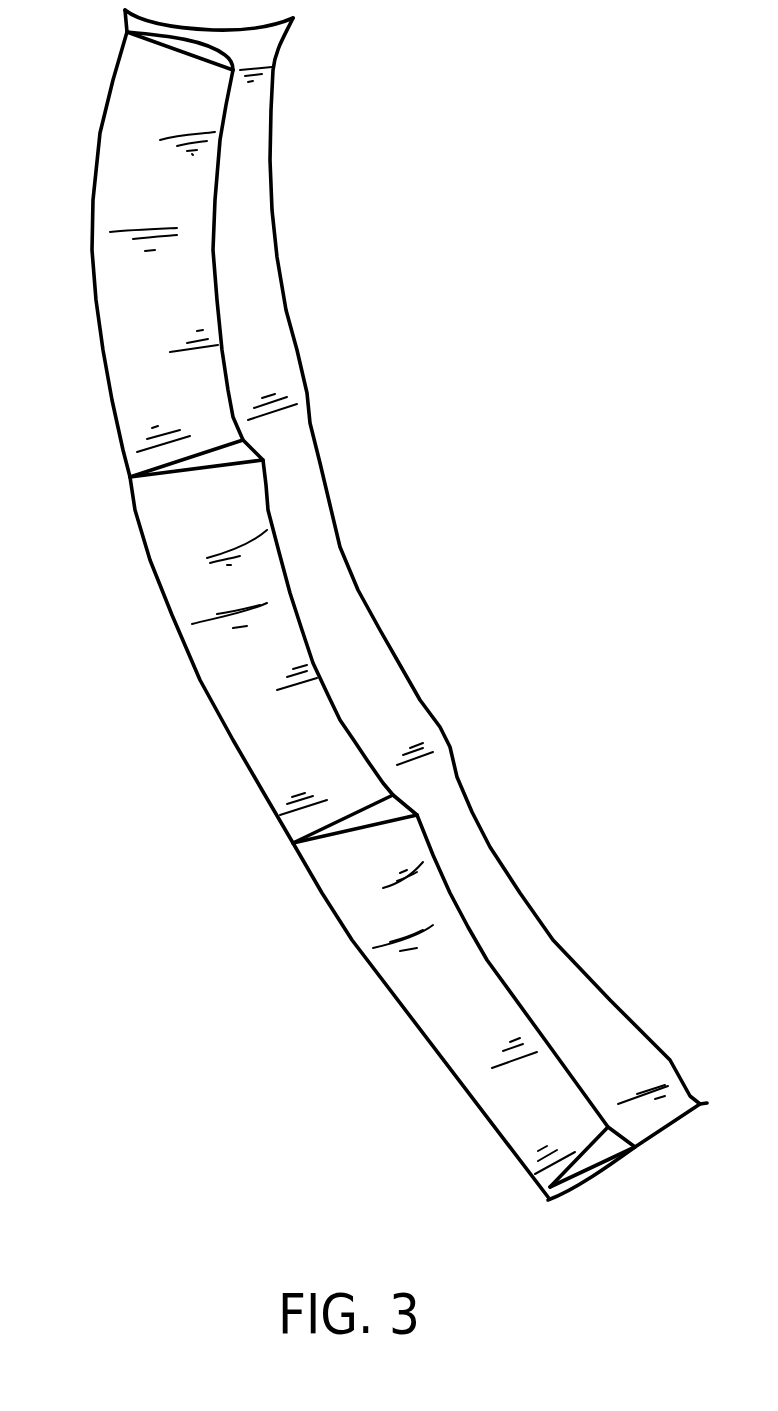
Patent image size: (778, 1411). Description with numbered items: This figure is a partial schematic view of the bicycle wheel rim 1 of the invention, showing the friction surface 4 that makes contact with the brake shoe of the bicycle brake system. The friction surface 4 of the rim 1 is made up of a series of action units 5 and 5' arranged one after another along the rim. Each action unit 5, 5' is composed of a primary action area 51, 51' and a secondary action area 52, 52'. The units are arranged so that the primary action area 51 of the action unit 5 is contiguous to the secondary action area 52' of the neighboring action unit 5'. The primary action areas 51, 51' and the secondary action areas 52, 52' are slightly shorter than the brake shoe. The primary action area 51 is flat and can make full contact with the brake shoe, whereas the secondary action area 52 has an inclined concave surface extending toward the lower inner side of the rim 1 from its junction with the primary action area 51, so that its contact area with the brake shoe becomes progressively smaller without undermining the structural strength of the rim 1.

The rim 1 is at (272, 140).
The friction surface 4 is at (213, 250).
The action unit 5 is at (189, 623).
The primary action area 51 is at (243, 749).
The secondary action area 52 is at (150, 495).
The action unit 5' is at (369, 982).
The primary action area 51' is at (517, 1156).
The secondary action area 52' is at (326, 879).